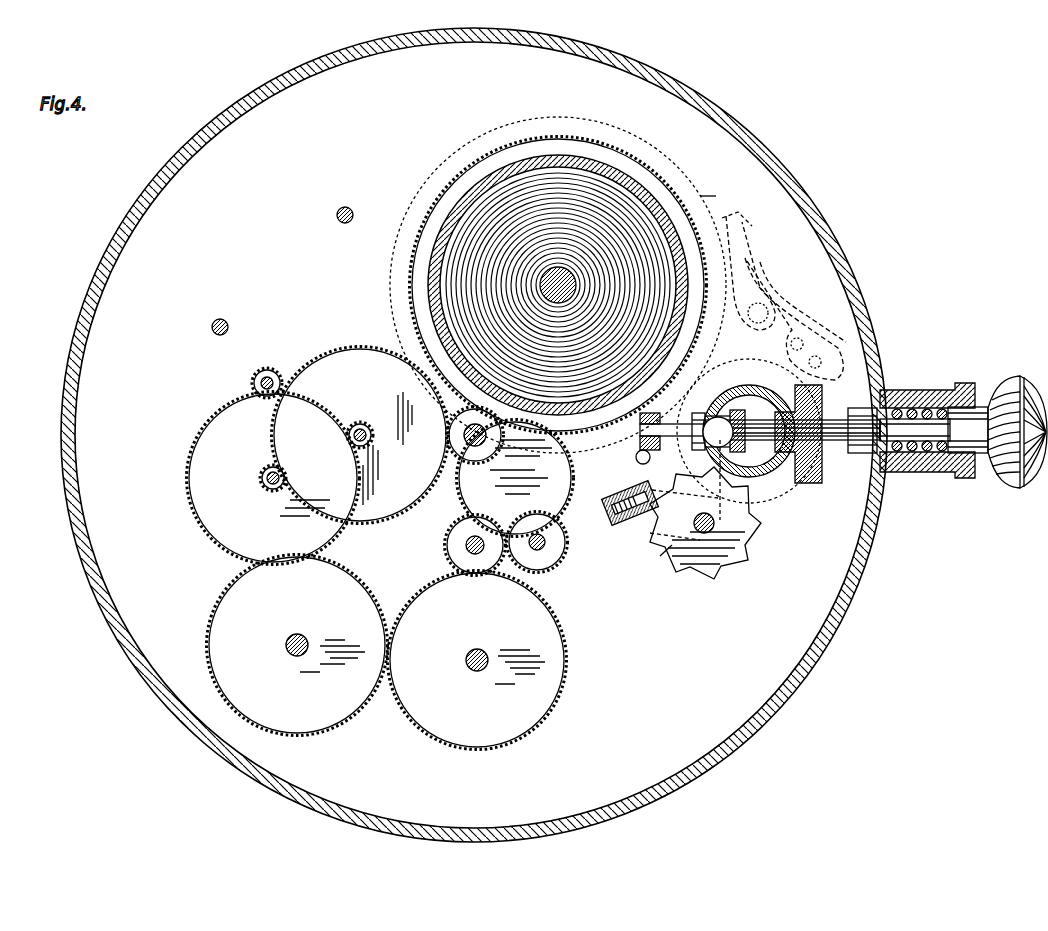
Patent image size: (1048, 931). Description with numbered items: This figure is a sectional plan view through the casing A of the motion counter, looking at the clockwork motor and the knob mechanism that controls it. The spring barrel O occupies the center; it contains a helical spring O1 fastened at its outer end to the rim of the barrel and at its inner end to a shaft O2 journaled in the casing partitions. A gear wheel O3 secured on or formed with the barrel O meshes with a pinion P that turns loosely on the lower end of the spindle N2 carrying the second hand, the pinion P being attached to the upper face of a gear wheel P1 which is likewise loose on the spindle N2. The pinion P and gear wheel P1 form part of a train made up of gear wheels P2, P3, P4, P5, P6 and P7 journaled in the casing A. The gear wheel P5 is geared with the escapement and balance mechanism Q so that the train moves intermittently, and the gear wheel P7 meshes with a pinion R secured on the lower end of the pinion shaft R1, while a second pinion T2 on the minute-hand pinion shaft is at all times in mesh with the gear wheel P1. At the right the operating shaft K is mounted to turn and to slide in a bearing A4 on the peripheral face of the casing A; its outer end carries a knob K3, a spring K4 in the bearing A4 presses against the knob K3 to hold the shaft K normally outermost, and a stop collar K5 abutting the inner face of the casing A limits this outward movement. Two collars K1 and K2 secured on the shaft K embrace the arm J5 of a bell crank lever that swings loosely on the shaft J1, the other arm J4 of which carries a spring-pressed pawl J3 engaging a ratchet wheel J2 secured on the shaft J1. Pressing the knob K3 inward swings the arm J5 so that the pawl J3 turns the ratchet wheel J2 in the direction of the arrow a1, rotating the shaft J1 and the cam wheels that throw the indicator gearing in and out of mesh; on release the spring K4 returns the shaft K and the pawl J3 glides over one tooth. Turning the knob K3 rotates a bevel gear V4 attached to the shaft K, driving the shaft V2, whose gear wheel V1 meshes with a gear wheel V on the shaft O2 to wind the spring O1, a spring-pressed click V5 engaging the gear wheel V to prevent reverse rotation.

The casing A is at (66, 391).
The bearing A4 is at (930, 470).
The shaft K is at (835, 428).
The collar K1 is at (698, 413).
The collar K2 is at (738, 410).
The knob K3 is at (1013, 382).
The spring K4 is at (915, 412).
The stop collar K5 is at (862, 420).
The gear wheel V is at (726, 205).
The gear wheel V1 is at (741, 380).
The shaft V2 is at (775, 512).
The bevel gear wheel V4 is at (816, 460).
The spring-pressed pawl or click V5 is at (740, 230).
The shaft J1 is at (704, 535).
The ratchet wheel J2 is at (671, 558).
The spring-pressed pawl J3 is at (633, 512).
The arm of bell crank lever J4 is at (634, 462).
The arm of bell crank lever J5 is at (718, 414).
The arrow a1 is at (766, 554).
The spring barrel O is at (465, 192).
The helical spring O1 is at (581, 185).
The shaft O2 is at (558, 285).
The gear wheel O3 is at (410, 271).
The pinion P is at (464, 447).
The gear wheel P1 is at (445, 515).
The gear wheel P2 is at (350, 436).
The gear wheel P3 is at (359, 352).
The gear wheel P4 is at (262, 480).
The gear wheel P5 is at (214, 521).
The gear wheel P6 is at (318, 732).
The gear wheel P7 is at (492, 740).
The shaft or spindle N2 is at (478, 447).
The escapement and balance mechanism Q is at (266, 369).
The pinion R is at (445, 562).
The pinion shaft R1 is at (475, 560).
The second pinion T2 is at (549, 555).